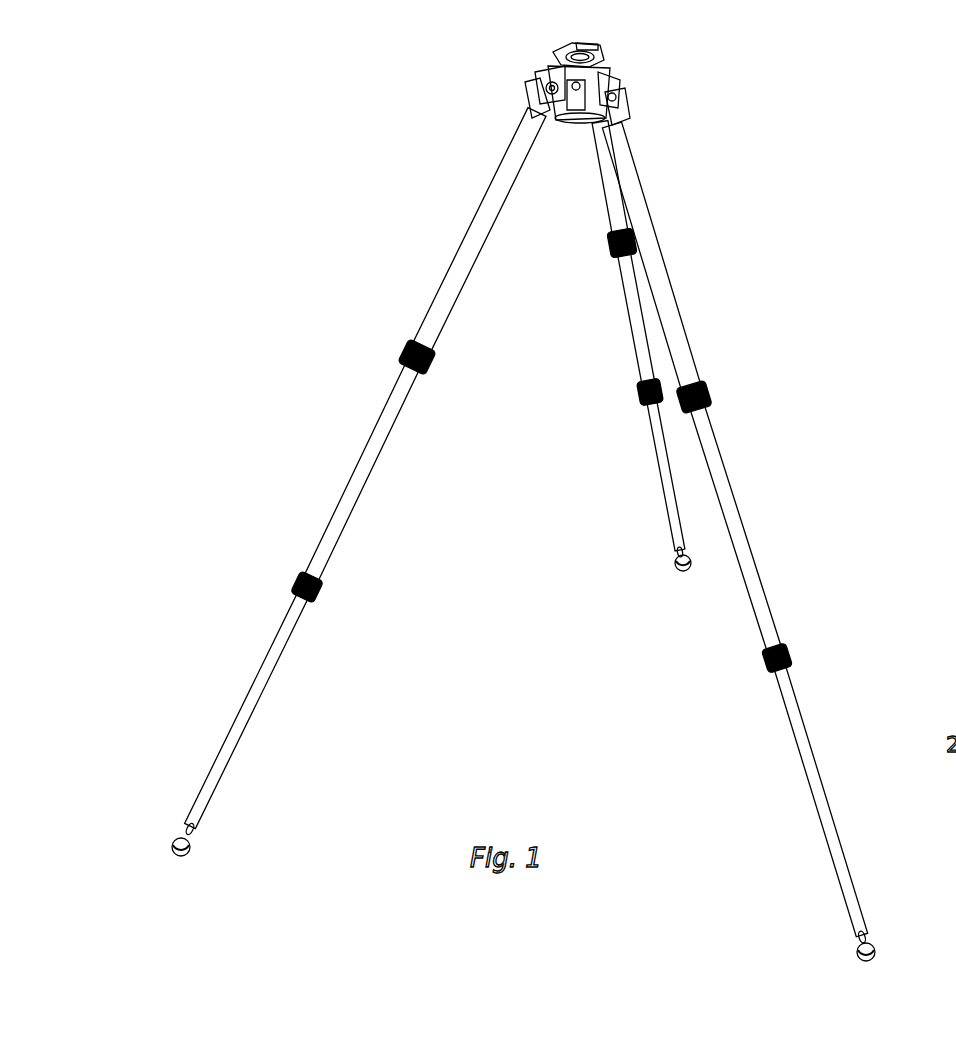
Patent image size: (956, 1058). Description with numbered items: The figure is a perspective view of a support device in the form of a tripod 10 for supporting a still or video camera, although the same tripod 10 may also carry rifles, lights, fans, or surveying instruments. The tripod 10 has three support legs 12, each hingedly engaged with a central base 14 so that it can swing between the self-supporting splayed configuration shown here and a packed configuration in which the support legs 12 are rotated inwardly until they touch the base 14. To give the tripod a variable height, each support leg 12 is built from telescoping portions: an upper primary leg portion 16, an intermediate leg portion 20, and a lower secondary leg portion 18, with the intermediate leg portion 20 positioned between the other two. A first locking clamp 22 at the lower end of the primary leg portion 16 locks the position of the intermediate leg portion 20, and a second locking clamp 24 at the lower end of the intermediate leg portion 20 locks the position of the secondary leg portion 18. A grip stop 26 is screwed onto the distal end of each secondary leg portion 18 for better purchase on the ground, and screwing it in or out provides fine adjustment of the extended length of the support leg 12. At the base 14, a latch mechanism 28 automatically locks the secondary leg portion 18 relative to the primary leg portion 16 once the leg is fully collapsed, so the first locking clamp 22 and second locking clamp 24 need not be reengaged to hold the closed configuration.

The tripod 10 is at (800, 214).
The support leg 12 is at (522, 139).
The base 14 is at (607, 70).
The primary leg portion 16 is at (510, 156).
The secondary leg portion 18 is at (270, 675).
The intermediate leg portion 20 is at (385, 445).
The first locking clamp 22 is at (432, 365).
The second locking clamp 24 is at (322, 590).
The grip stop 26 is at (196, 846).
The latch mechanism 28 is at (617, 98).